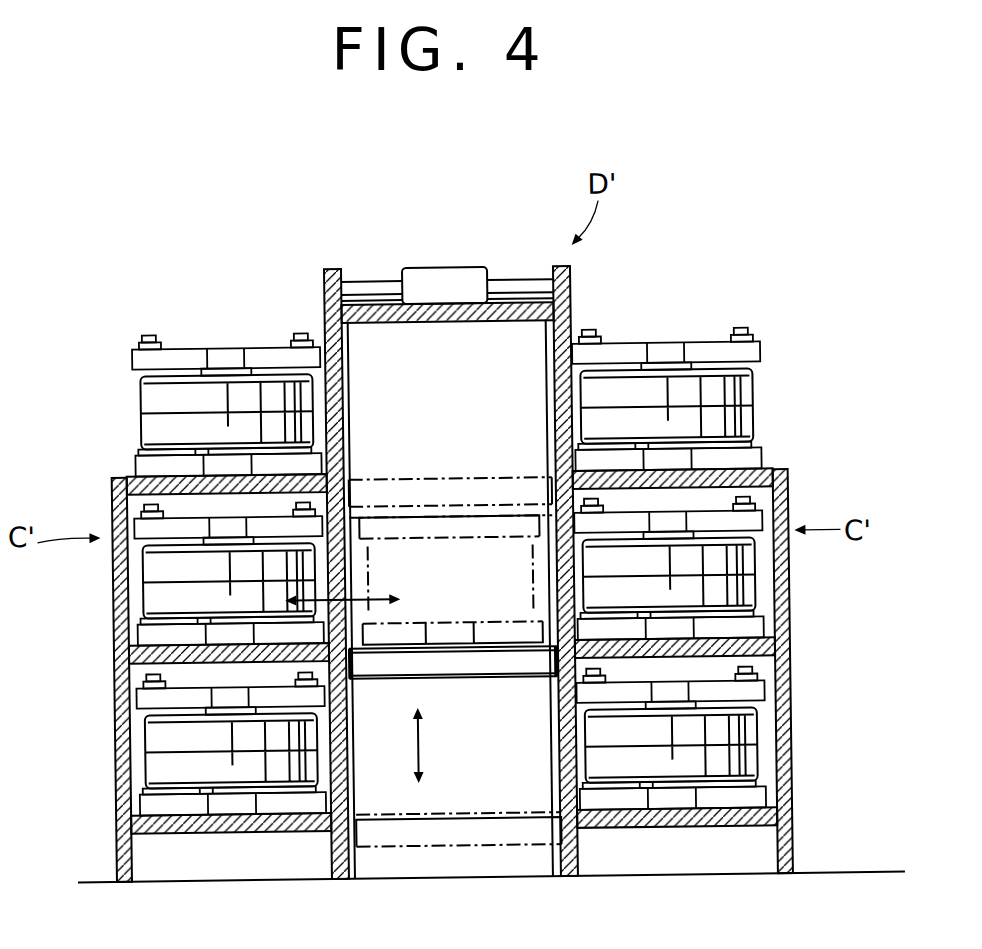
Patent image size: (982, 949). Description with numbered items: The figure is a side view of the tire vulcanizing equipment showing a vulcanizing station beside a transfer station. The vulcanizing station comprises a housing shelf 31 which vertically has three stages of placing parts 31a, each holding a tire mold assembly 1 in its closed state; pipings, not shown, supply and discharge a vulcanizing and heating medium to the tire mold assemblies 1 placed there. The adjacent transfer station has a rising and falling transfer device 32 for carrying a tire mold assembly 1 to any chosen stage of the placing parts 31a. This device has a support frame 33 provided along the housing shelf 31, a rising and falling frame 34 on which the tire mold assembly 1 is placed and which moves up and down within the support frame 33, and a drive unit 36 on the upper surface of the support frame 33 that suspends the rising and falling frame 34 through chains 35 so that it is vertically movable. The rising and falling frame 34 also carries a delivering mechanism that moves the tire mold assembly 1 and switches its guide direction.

The tire mold assembly 1 is at (147, 388).
The housing shelf 31 is at (113, 502).
The placing part 31a is at (151, 478).
The rising and falling transfer device 32 is at (504, 266).
The support frame 33 is at (578, 308).
The rising and falling frame 34 is at (466, 665).
The chain 35 is at (548, 385).
The drive unit 36 is at (444, 279).